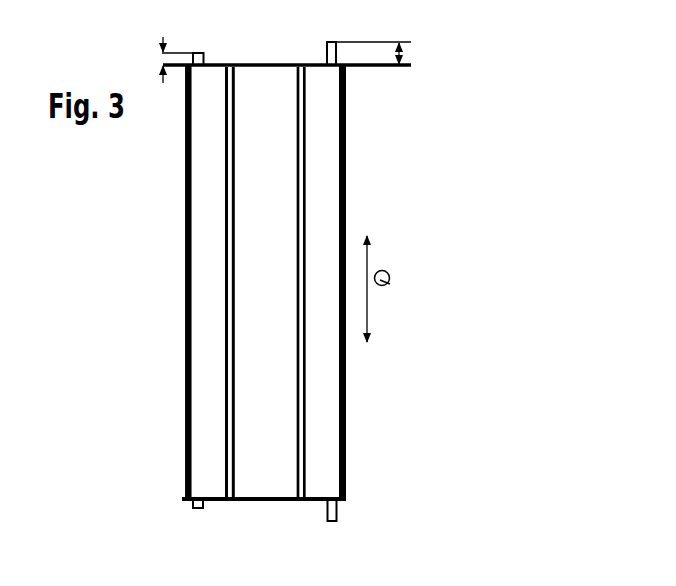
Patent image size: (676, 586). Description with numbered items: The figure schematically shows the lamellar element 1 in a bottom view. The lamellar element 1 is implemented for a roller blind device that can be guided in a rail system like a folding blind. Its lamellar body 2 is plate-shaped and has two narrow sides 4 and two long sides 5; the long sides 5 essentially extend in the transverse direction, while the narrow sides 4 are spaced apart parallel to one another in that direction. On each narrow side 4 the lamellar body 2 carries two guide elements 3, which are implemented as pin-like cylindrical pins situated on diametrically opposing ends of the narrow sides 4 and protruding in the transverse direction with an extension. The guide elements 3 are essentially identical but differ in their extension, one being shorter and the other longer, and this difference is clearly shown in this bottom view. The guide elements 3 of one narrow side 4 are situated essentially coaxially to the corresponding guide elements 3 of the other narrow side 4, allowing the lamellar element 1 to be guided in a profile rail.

The lamellar element 1 is at (450, 126).
The lamellar body 2 is at (249, 292).
The guide elements 3 is at (207, 49).
The narrow sides 4 is at (273, 59).
The long sides 5 is at (176, 181).